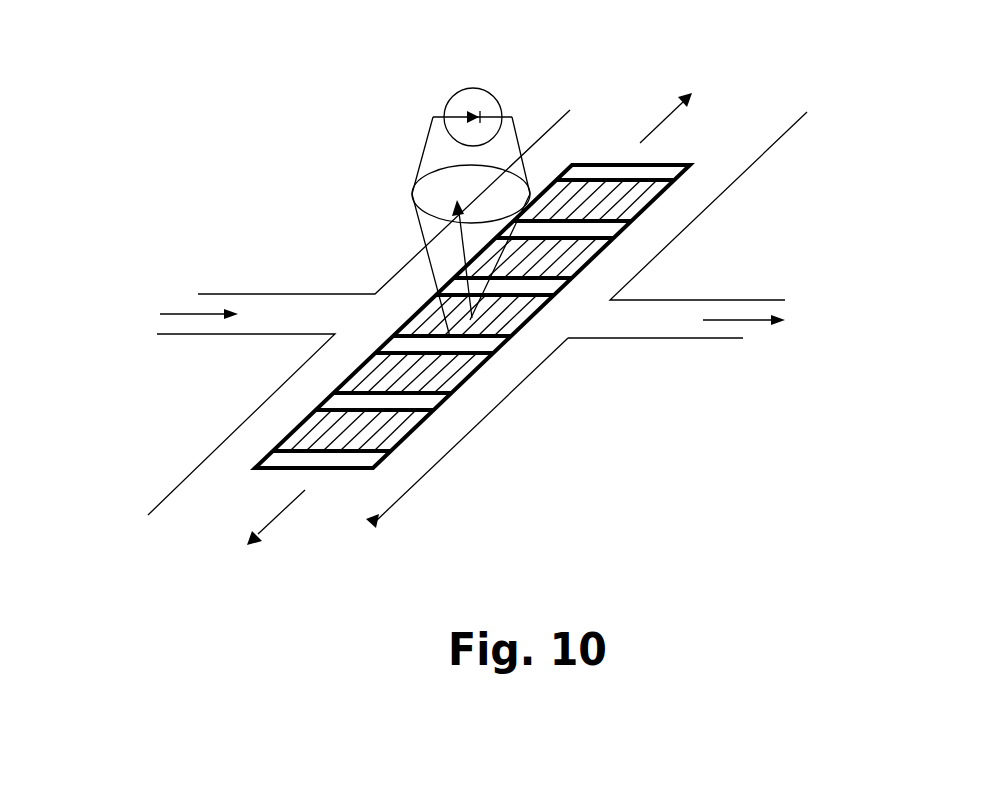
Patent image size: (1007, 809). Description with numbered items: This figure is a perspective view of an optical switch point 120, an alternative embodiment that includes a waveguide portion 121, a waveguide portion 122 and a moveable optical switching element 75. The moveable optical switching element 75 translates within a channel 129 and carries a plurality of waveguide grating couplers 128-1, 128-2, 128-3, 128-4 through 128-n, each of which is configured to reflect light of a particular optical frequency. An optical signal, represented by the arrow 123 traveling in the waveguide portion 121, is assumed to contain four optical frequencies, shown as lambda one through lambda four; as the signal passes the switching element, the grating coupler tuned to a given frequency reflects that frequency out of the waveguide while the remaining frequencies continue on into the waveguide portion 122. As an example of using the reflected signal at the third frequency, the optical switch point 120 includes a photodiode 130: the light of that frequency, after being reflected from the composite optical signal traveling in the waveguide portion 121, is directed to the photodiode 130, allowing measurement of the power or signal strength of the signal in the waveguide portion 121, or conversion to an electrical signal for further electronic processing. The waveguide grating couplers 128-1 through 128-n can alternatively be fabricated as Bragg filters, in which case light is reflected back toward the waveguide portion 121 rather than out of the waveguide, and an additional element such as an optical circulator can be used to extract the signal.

The optical switch point 120 is at (336, 53).
The waveguide portion 121 is at (320, 294).
The waveguide portion 122 is at (650, 340).
The optical signal 123 is at (195, 312).
The moveable optical switching element 75 is at (260, 457).
The waveguide grating coupler 128-1 is at (400, 447).
The waveguide grating coupler 128-2 is at (457, 390).
The waveguide grating coupler 128-3 is at (518, 335).
The waveguide grating coupler 128-4 is at (545, 260).
The waveguide grating coupler 128-n is at (655, 198).
The channel 129 is at (374, 526).
The photodiode 130 is at (497, 80).